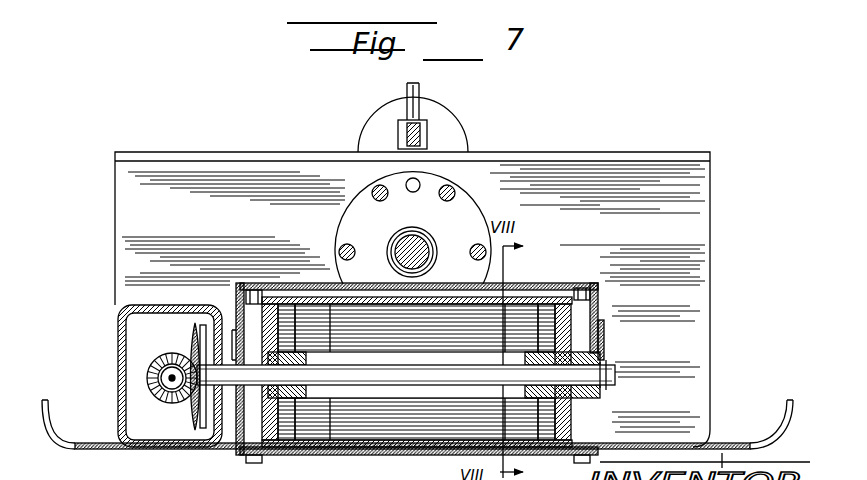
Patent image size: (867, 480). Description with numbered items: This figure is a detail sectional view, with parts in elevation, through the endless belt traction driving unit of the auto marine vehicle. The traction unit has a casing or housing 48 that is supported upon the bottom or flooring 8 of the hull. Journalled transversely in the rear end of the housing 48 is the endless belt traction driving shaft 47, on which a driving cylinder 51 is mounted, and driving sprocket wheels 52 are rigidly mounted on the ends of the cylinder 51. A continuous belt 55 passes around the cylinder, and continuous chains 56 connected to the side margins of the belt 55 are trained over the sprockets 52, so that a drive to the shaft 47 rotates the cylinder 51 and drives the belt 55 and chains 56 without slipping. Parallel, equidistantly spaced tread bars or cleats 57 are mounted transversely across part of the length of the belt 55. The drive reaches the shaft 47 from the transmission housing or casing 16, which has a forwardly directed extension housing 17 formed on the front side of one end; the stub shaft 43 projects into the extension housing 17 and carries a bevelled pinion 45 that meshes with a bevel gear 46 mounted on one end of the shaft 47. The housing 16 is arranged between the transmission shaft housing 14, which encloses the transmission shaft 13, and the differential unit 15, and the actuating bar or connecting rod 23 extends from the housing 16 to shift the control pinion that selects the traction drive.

The bottom or flooring 8 is at (108, 449).
The transmission shaft 13 is at (393, 251).
The transmission shaft housing 14 is at (432, 247).
The differential unit 15 is at (445, 118).
The housing or casing 16 is at (695, 221).
The forwardly directed extension housing 17 is at (120, 348).
The actuating bar or connecting rod 23 is at (398, 135).
The stub shaft 43 is at (175, 374).
The bevelled pinion 45 is at (192, 328).
The bevel gear 46 is at (194, 414).
The endless belt traction driving shaft 47 is at (380, 372).
The casing or housing 48 is at (596, 297).
The driving cylinder 51 is at (466, 306).
The driving sprocket wheels 52 is at (253, 292).
The continuous belt 55 is at (368, 452).
The continuous chains 56 is at (268, 296).
The tread bars or cleats 57 is at (522, 290).